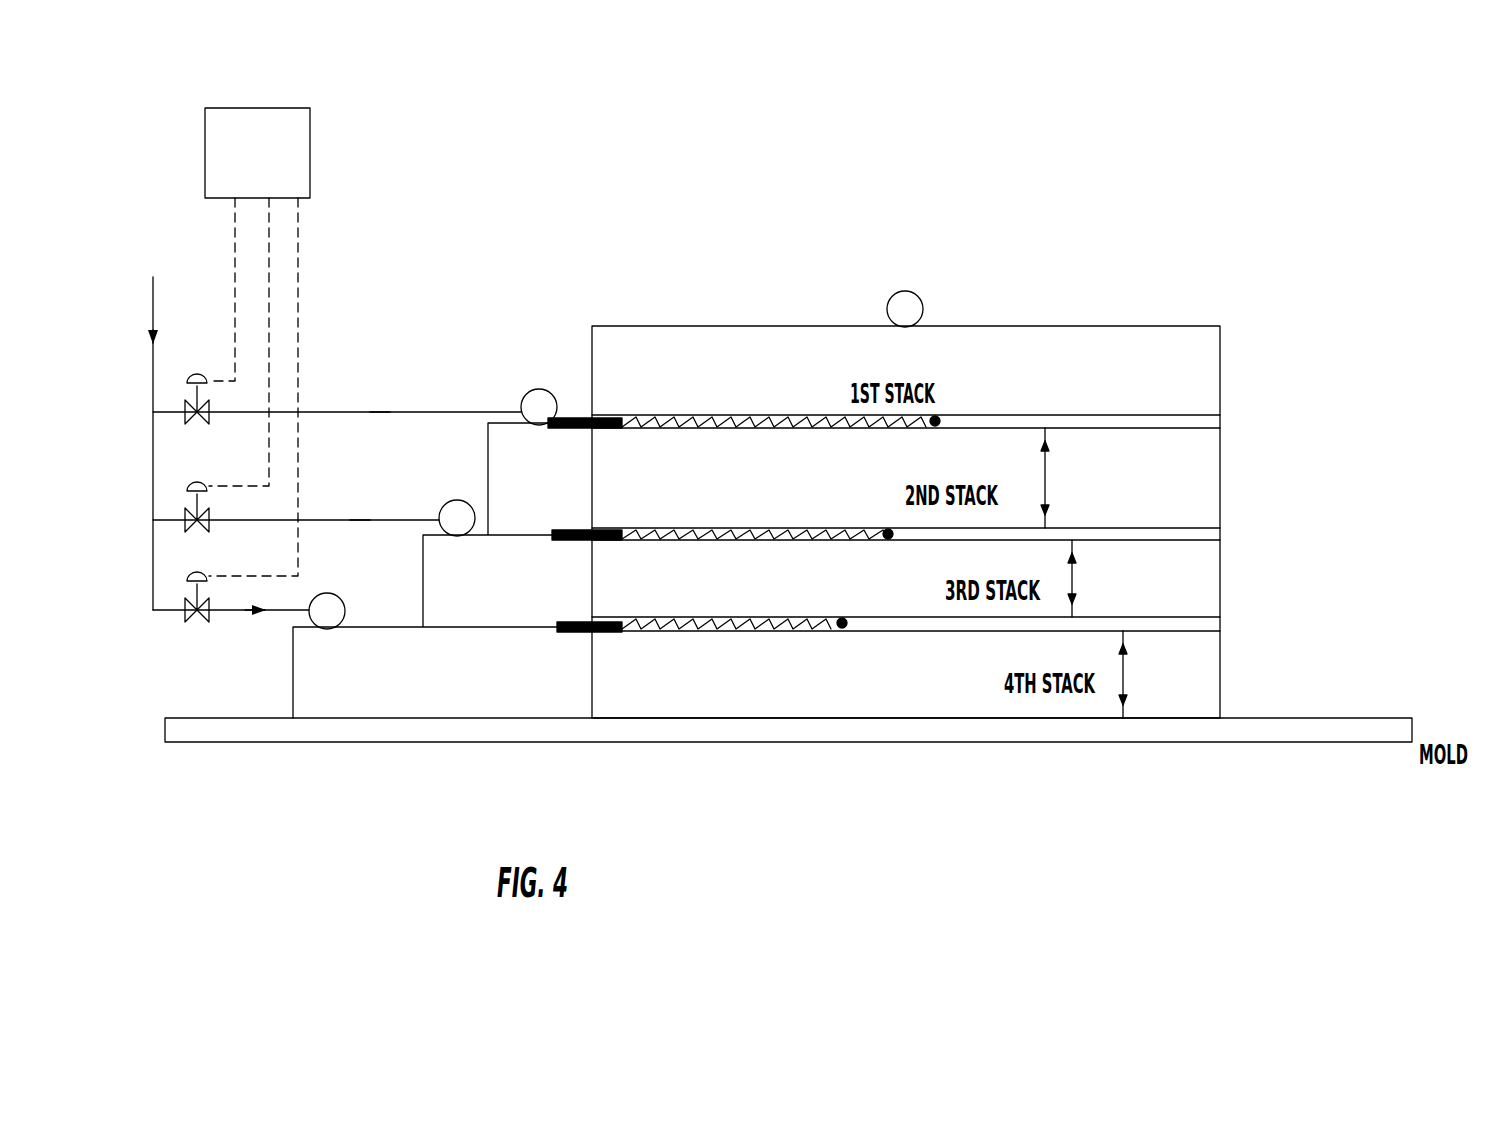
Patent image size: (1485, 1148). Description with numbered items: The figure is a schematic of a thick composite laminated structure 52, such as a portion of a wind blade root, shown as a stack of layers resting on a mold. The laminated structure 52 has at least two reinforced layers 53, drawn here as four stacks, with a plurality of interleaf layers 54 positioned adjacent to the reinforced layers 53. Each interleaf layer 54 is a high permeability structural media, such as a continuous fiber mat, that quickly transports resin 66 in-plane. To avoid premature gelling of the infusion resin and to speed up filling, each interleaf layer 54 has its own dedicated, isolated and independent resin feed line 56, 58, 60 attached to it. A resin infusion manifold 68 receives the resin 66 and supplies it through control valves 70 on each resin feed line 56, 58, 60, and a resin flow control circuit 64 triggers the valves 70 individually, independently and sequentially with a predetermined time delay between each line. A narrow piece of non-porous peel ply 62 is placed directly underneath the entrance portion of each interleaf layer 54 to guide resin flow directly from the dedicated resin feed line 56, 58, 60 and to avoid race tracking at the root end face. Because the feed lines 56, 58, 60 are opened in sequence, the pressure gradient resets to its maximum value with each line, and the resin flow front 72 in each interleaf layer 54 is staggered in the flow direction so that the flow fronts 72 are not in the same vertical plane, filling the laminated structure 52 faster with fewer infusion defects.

The laminated structure 52 is at (1000, 427).
The reinforced layer 53 is at (1205, 366).
The interleaf layer 54 is at (1213, 419).
The resin feed line 56 is at (530, 394).
The resin feed line 58 is at (449, 504).
The resin feed line 60 is at (318, 597).
The peel ply 62 is at (557, 627).
The resin flow control circuit 64 is at (257, 342).
The resin 66 is at (152, 290).
The resin infusion manifold 68 is at (152, 478).
The control valve 70 is at (204, 420).
The resin flow front 72 is at (842, 623).